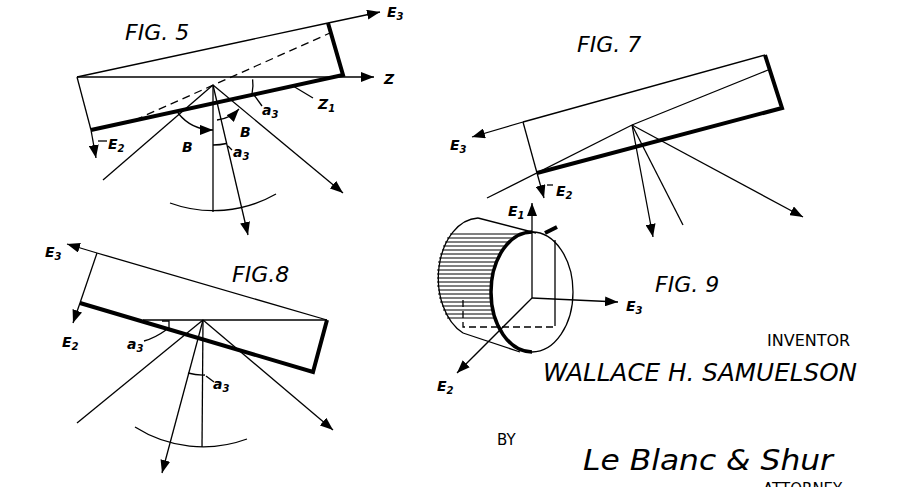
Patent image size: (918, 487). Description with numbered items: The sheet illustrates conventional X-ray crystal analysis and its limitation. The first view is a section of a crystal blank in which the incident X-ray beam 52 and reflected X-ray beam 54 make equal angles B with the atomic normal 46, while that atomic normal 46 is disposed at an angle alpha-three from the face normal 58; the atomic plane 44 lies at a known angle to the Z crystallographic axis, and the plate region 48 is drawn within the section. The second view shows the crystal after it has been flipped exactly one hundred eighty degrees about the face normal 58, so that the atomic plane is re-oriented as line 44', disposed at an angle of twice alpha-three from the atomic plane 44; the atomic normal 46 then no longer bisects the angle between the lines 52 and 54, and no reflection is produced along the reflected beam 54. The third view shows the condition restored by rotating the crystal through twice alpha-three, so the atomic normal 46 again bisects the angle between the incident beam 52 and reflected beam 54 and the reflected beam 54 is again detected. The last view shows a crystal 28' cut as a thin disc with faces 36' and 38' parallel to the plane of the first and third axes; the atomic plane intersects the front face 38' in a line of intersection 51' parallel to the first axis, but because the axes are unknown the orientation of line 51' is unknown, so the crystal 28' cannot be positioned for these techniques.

In FIG. 5, the atomic normal 46 is at (211, 176).
In FIG. 7, the atomic normal 46 is at (664, 189).
In FIG. 8, the atomic normal 46 is at (203, 423).
In FIG. 5, the transparent plate 48 is at (143, 86).
In FIG. 5, the incident X-ray beam 52 is at (107, 176).
In FIG. 7, the incident X-ray beam 52 is at (518, 182).
In FIG. 8, the incident X-ray beam 52 is at (113, 393).
In FIG. 5, the reflected X-ray beam 54 is at (303, 157).
In FIG. 7, the reflected X-ray beam 54 is at (737, 182).
In FIG. 8, the reflected X-ray beam 54 is at (293, 397).
In FIG. 5, the face normal 58 is at (236, 181).
In FIG. 7, the face normal 58 is at (643, 188).
In FIG. 8, the face normal 58 is at (177, 422).
In FIG. 7, the re-oriented atomic plane line 44' is at (698, 95).
In FIG. 9, the atomic plane 44 is at (522, 325).
In FIG. 9, the crystal 28' is at (569, 221).
In FIG. 9, the face 36' is at (466, 285).
In FIG. 9, the front face 38' is at (553, 292).
In FIG. 9, the line of intersection 51' is at (584, 283).